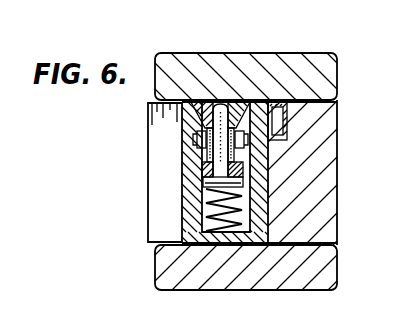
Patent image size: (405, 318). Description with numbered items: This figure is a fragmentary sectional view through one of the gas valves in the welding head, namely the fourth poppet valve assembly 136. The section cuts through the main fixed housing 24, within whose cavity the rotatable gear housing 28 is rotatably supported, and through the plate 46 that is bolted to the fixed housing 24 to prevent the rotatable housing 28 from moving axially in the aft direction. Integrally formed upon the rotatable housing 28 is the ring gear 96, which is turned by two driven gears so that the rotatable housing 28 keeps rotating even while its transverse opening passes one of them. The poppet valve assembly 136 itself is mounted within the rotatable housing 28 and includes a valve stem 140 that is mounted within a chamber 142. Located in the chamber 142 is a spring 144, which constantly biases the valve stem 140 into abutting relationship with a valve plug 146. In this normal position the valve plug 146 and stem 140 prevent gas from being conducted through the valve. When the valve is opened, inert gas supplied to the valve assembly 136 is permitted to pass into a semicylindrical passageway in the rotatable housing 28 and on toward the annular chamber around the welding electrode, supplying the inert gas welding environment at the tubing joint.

The main fixed housing 24 is at (327, 253).
The rotatable gear housing 28 is at (160, 181).
The plate 46 is at (325, 80).
The ring gear 96 is at (284, 122).
The fourth poppet valve assembly 136 is at (267, 165).
The valve stem 140 is at (223, 104).
The chamber 142 is at (240, 207).
The spring 144 is at (205, 210).
The valve plug 146 is at (211, 102).